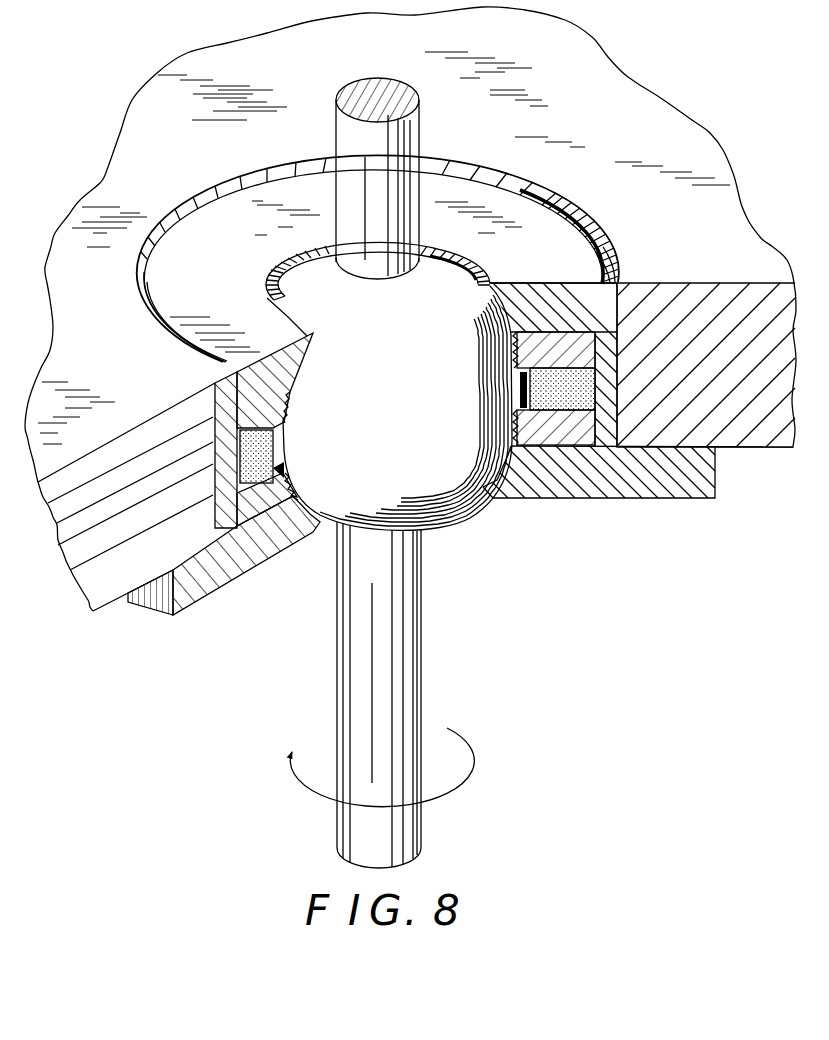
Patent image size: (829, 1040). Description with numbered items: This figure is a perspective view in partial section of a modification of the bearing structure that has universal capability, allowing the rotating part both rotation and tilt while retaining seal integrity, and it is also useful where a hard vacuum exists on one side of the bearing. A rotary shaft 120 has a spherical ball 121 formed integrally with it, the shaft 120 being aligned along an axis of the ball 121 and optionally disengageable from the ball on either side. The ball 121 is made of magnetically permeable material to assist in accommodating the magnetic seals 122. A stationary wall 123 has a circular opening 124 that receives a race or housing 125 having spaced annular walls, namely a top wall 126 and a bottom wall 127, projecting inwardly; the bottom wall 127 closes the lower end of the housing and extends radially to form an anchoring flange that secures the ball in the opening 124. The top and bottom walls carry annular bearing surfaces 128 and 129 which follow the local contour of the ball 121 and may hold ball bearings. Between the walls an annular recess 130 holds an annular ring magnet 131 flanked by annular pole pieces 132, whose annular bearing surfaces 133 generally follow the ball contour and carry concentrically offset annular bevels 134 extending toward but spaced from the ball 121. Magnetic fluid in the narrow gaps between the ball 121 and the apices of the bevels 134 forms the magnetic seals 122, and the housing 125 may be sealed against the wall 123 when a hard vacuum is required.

The rotary shaft 120 is at (375, 78).
The spherical ball 121 is at (381, 331).
The magnetic seals 122 is at (291, 391).
The stationary wall 123 is at (648, 90).
The circular opening 124 is at (217, 453).
The race or housing 125 is at (228, 271).
The top wall 126 is at (558, 283).
The bottom wall 127 is at (548, 495).
The annular bearing surface 128 is at (500, 316).
The annular bearing surface 129 is at (503, 466).
The annular recess 130 is at (597, 345).
The annular ring magnet 131 is at (572, 404).
The annular pole pieces 132 is at (568, 357).
The annular bearing surfaces 133 is at (501, 427).
The concentrically offset annular bevels 134 is at (288, 472).